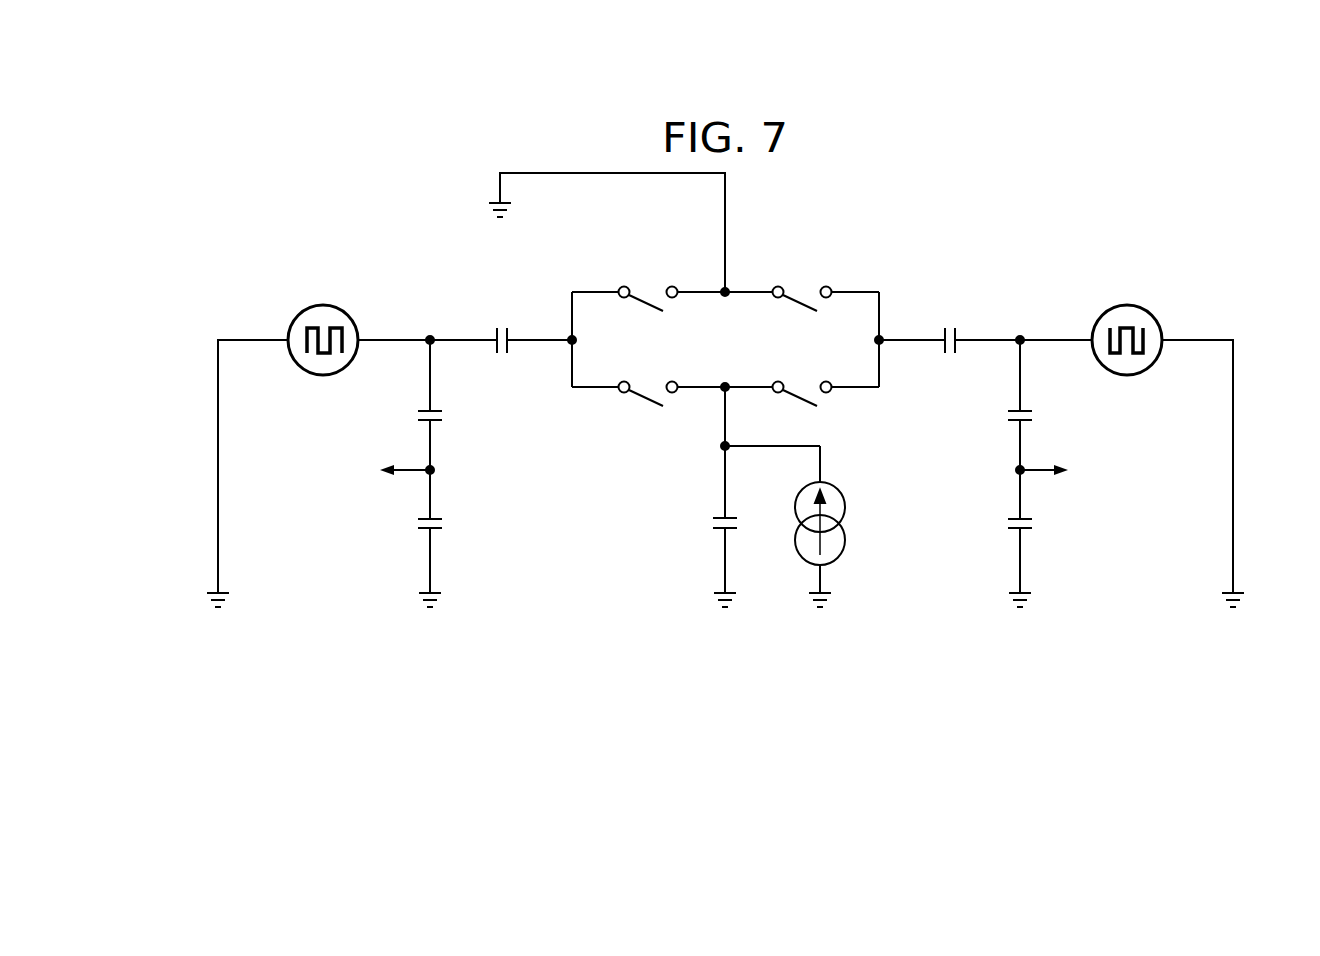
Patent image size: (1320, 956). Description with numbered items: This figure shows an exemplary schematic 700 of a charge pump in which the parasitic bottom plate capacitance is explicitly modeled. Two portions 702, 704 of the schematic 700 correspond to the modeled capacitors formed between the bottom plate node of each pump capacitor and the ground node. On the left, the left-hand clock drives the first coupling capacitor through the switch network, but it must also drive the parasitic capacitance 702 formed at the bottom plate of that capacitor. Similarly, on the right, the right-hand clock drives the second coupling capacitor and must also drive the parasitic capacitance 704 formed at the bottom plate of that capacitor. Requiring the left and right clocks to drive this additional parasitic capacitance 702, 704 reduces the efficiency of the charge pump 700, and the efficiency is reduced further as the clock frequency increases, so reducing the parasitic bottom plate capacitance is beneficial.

The schematic 700 is at (385, 103).
The parasitic capacitance 702 is at (323, 576).
The parasitic capacitance 704 is at (1127, 576).